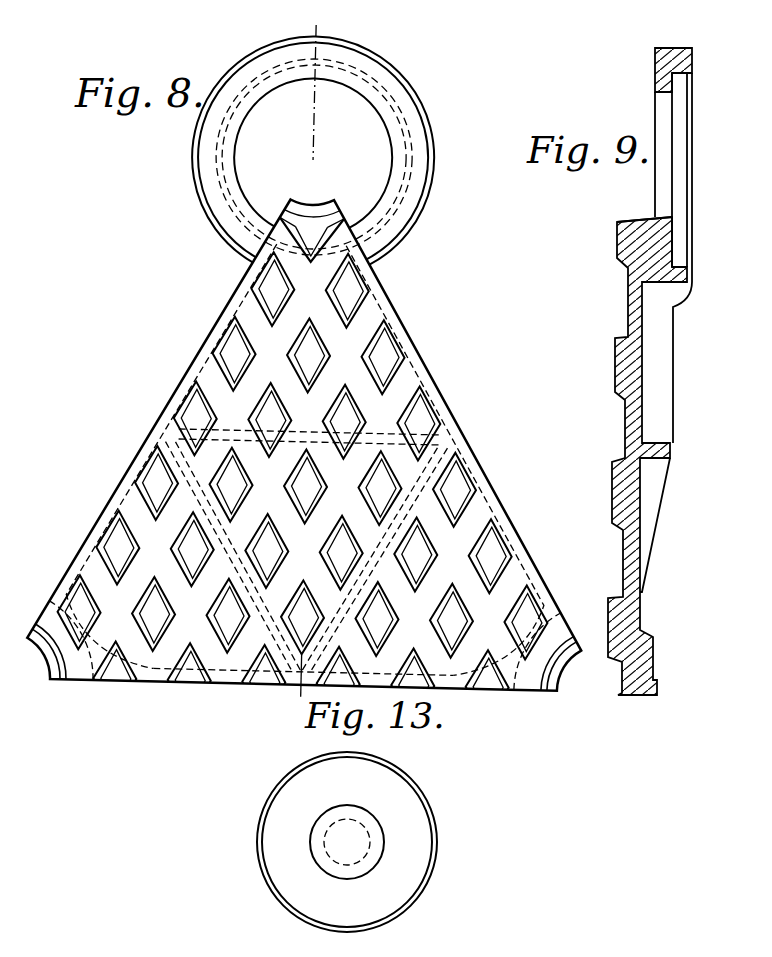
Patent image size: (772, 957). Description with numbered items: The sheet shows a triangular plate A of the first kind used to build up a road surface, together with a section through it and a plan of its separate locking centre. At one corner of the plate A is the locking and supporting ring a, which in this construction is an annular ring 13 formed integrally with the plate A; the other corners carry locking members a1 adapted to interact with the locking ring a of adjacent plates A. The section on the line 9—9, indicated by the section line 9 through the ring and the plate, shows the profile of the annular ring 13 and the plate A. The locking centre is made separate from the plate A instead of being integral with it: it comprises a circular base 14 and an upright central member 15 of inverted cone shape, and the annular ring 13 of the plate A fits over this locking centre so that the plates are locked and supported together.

In FIG. 8, the section line 9 is at (290, 706).
In FIG. 8, the locking and supporting ring a is at (236, 198).
In FIG. 9, the locking and supporting ring a is at (644, 207).
In FIG. 8, the annular ring 13 is at (413, 156).
In FIG. 9, the annular ring 13 is at (672, 63).
In FIG. 8, the triangular plate A is at (309, 459).
In FIG. 9, the triangular plate A is at (630, 425).
In FIG. 8, the locking member a1 is at (302, 652).
In FIG. 13, the circular base 14 is at (347, 842).
In FIG. 13, the upright central member 15 is at (347, 842).